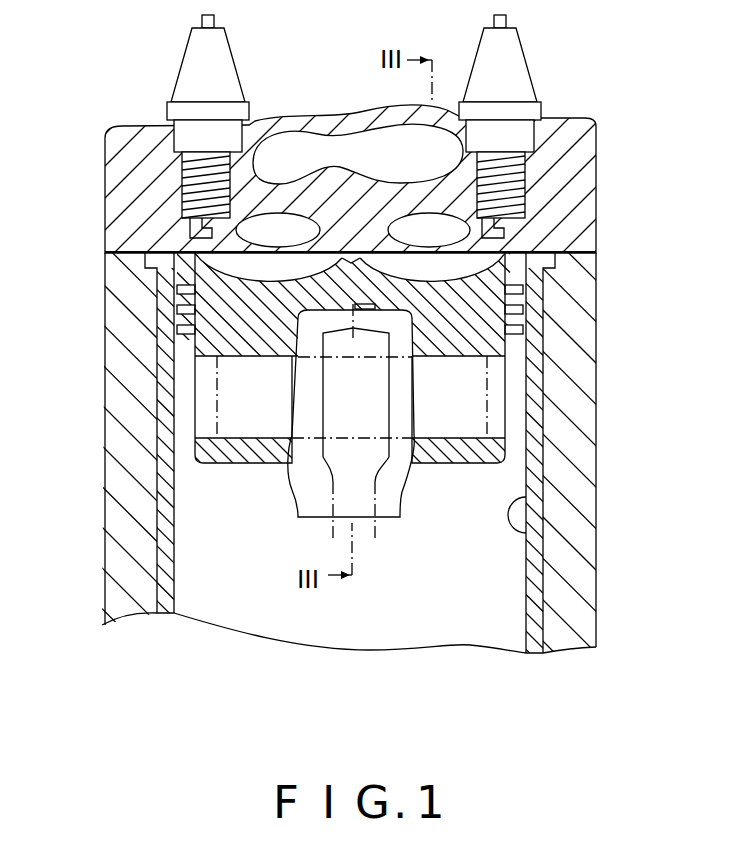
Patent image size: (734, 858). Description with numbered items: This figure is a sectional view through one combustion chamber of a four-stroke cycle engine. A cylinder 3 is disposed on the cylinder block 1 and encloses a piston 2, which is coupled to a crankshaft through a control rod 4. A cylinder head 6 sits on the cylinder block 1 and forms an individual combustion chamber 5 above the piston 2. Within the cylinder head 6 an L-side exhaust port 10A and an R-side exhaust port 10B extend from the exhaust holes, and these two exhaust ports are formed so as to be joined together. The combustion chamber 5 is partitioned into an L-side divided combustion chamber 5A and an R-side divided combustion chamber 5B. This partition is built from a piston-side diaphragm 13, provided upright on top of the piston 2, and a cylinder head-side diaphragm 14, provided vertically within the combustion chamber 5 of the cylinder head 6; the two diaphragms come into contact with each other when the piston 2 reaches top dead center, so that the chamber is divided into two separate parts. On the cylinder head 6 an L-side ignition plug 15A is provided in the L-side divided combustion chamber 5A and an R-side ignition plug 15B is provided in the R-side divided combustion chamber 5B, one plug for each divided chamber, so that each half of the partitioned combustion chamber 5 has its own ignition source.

The cylinder block 1 is at (588, 388).
The piston 2 is at (490, 317).
The cylinder 3 is at (543, 520).
The control rod 4 is at (372, 540).
The combustion chamber 5 is at (345, 250).
The L-side divided combustion chamber 5A is at (190, 283).
The R-side divided combustion chamber 5B is at (478, 264).
The cylinder head 6 is at (118, 147).
The L-side exhaust port 10A is at (177, 198).
The R-side exhaust port 10B is at (525, 181).
The piston-side diaphragm 13 is at (363, 266).
The cylinder head-side diaphragm 14 is at (360, 255).
The L-side ignition plug 15A is at (199, 72).
The R-side ignition plug 15B is at (516, 75).